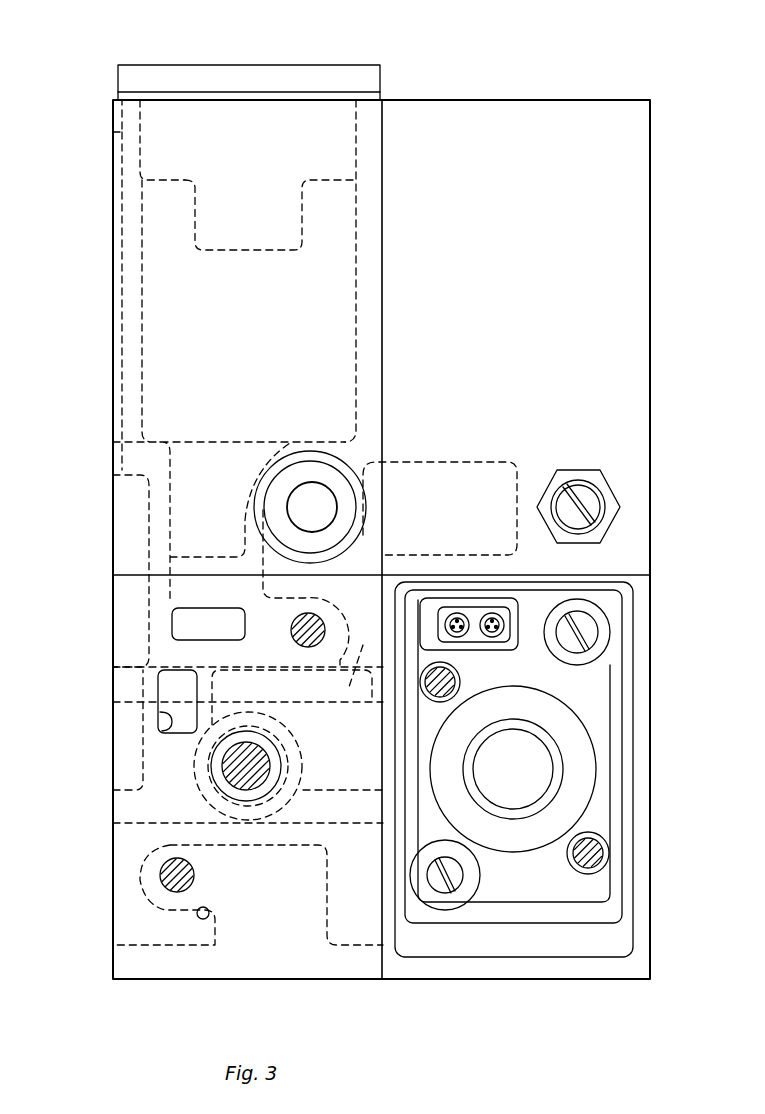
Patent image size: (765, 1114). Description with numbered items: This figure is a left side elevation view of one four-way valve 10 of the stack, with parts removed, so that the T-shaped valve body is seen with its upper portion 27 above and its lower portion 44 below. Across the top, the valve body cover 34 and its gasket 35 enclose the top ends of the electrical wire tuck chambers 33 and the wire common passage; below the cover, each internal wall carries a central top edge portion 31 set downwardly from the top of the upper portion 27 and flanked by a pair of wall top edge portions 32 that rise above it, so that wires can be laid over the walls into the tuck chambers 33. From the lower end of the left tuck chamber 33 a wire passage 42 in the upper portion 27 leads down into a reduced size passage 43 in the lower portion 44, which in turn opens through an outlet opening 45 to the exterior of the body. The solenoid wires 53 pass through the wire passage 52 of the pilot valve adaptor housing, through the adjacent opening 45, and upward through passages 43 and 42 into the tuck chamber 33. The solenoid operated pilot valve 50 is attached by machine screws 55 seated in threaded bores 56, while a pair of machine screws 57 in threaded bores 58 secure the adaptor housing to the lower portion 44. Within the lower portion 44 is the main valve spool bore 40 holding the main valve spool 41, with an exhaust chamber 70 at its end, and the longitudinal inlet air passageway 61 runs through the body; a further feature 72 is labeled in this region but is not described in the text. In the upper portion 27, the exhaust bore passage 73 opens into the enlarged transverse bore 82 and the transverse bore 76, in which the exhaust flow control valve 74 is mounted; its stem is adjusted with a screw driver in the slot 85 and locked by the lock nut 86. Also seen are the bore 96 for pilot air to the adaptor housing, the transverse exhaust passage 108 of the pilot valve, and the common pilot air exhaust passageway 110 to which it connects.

The four-way valve 10 is at (172, 979).
The valve body upper portion 27 is at (378, 118).
The wall central top edge portion 31 is at (252, 250).
The wall top edge portions 32 is at (165, 198).
The electrical wire tuck chamber 33 is at (353, 257).
The valve body cover 34 is at (238, 72).
The gasket 35 is at (310, 95).
The main valve spool bore 40 is at (275, 756).
The main valve spool 41 is at (222, 788).
The wire passage 42 is at (172, 482).
The reduced size wire passage 43 is at (172, 588).
The valve body lower portion 44 is at (128, 618).
The wire outlet opening 45 is at (222, 633).
The solenoid operated pilot valve 50 is at (632, 702).
The wire passage 52 is at (487, 600).
The solenoid wires 53 is at (460, 633).
The machine screws 55 is at (446, 688).
The threaded bores 56 is at (445, 697).
The machine screws 57 is at (302, 620).
The threaded bores 58 is at (317, 627).
The inlet air passageway 61 is at (143, 823).
The exhaust chamber 70 is at (303, 760).
The rib 72 is at (362, 672).
The exhaust bore passage 73 is at (356, 484).
The exhaust flow control valve 74 is at (582, 470).
The transverse bore 76 is at (330, 503).
The enlarged diameter transverse bore 82 is at (288, 462).
The slot 85 is at (580, 505).
The lock nut 86 is at (568, 475).
The bore 96 is at (210, 913).
The transverse exhaust passage 108 is at (160, 735).
The common pilot air exhaust passageway 110 is at (232, 697).